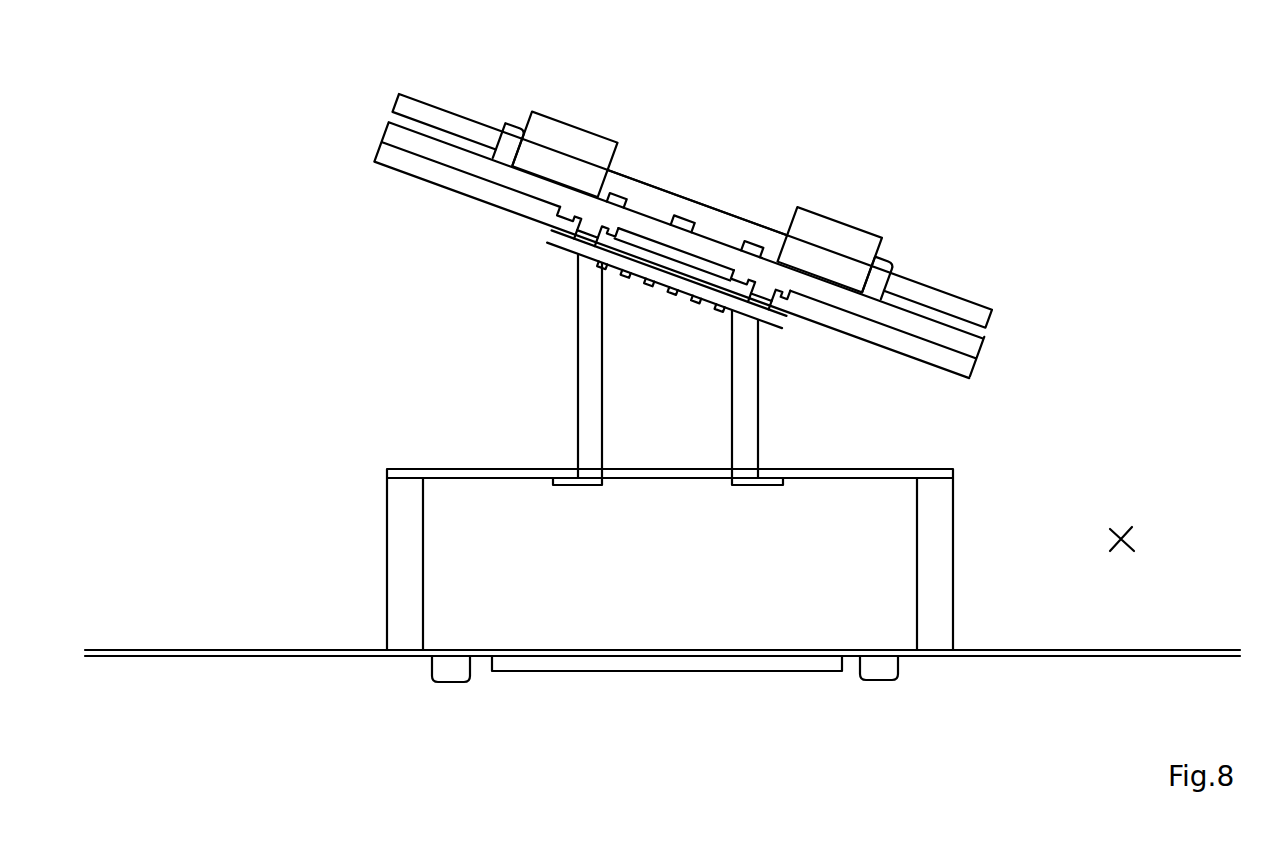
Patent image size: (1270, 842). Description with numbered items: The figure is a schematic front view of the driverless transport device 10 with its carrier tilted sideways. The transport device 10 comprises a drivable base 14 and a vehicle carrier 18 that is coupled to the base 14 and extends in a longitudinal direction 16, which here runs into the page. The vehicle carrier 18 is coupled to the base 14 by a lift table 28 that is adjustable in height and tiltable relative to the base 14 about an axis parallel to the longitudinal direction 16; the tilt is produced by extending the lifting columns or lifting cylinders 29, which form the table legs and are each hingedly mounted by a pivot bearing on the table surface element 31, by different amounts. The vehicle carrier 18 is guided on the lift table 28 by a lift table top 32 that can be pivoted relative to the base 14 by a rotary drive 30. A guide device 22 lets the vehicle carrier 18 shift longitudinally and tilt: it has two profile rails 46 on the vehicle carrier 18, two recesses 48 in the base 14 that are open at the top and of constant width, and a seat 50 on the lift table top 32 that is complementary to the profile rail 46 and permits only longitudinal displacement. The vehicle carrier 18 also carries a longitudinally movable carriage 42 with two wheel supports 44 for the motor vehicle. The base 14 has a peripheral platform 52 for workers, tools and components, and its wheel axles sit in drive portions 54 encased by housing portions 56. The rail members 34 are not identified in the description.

The transport device 10 is at (1081, 137).
The drivable base 14 is at (1059, 437).
The longitudinal direction 16 is at (1128, 540).
The vehicle carrier 18 is at (1073, 268).
The guide device 22 is at (513, 256).
The lift table 28 is at (481, 390).
The lifting columns or lifting cylinders 29 is at (600, 418).
The rotary drive 30 is at (751, 204).
The table surface element 31 is at (667, 258).
The lift table top 32 is at (681, 190).
The mounting rail 34 is at (411, 78).
The carriage 42 is at (531, 85).
The wheel supports 44 is at (571, 118).
The profile rails 46 is at (575, 246).
The recesses 48 is at (567, 484).
The seat 50 is at (598, 262).
The peripheral platform 52 is at (150, 648).
The drive portions 54 is at (360, 546).
The housing portions 56 is at (410, 566).